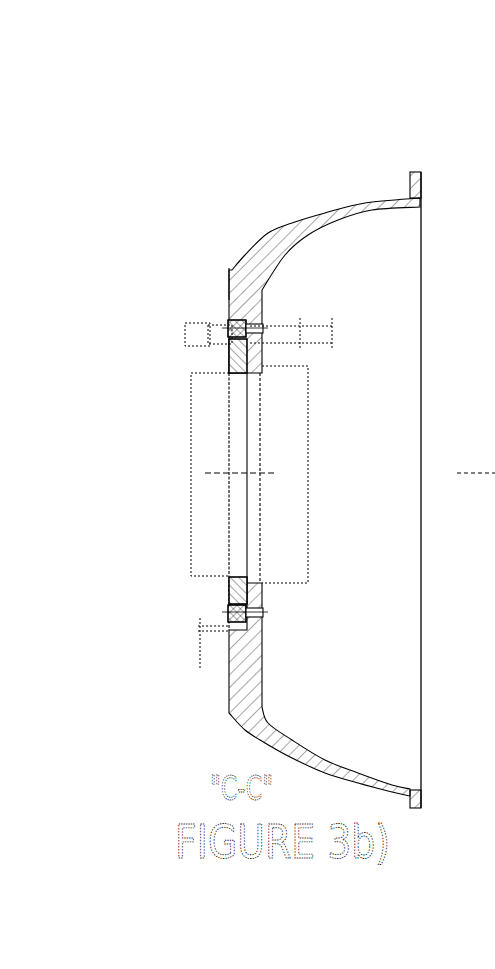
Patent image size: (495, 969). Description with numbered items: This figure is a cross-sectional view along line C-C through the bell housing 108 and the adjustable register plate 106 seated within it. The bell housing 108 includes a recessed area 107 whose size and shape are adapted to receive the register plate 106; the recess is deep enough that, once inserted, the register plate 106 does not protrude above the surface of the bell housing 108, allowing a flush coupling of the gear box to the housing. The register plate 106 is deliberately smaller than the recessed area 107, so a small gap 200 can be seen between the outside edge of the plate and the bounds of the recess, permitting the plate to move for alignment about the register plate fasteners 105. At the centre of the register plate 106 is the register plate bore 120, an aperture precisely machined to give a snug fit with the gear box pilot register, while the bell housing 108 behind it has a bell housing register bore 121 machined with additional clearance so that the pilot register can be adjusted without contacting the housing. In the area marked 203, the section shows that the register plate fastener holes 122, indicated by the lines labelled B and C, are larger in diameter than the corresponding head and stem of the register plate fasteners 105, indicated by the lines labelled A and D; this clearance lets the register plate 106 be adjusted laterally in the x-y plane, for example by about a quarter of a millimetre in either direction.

The register plate fasteners 105 is at (230, 325).
The register plate 106 is at (230, 368).
The recessed area 107 is at (235, 643).
The bell housing 108 is at (366, 200).
The register plate bore 120 is at (188, 492).
The bell housing register bore 121 is at (292, 492).
The register plate fastener holes 122 is at (229, 268).
The gap 200 is at (198, 628).
The area showing fastener clearance relationship 203 is at (195, 323).